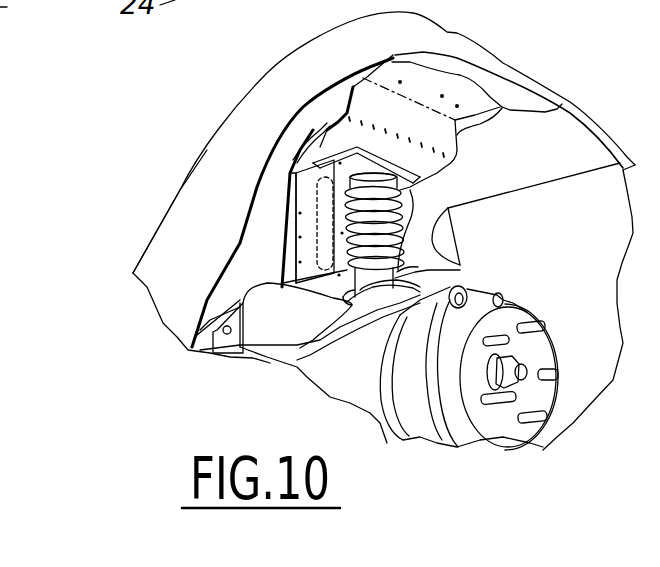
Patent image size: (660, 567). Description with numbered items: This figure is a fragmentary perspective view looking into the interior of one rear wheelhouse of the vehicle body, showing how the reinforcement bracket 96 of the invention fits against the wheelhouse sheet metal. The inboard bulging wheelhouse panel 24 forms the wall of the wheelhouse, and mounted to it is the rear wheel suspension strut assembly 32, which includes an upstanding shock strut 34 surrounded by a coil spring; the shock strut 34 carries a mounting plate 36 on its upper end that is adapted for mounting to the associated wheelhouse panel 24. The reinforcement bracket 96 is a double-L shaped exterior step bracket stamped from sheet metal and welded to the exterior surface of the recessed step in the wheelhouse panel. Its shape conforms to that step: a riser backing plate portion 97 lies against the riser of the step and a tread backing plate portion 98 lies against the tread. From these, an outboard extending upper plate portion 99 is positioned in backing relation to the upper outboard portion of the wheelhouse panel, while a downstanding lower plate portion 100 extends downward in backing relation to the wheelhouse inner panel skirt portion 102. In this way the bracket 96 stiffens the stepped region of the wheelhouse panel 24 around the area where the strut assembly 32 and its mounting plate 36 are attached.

The wheelhouse panel 24 is at (470, 33).
The rear wheel suspension strut assembly 32 is at (412, 229).
The shock strut 34 is at (397, 277).
The mounting plate 36 is at (425, 183).
The reinforcement bracket 96 is at (279, 228).
The riser backing plate portion 97 is at (363, 92).
The tread backing plate portion 98 is at (345, 125).
The upper plate portion 99 is at (406, 54).
The lower plate portion 100 is at (303, 187).
The wheelhouse inner panel skirt portion 102 is at (253, 257).